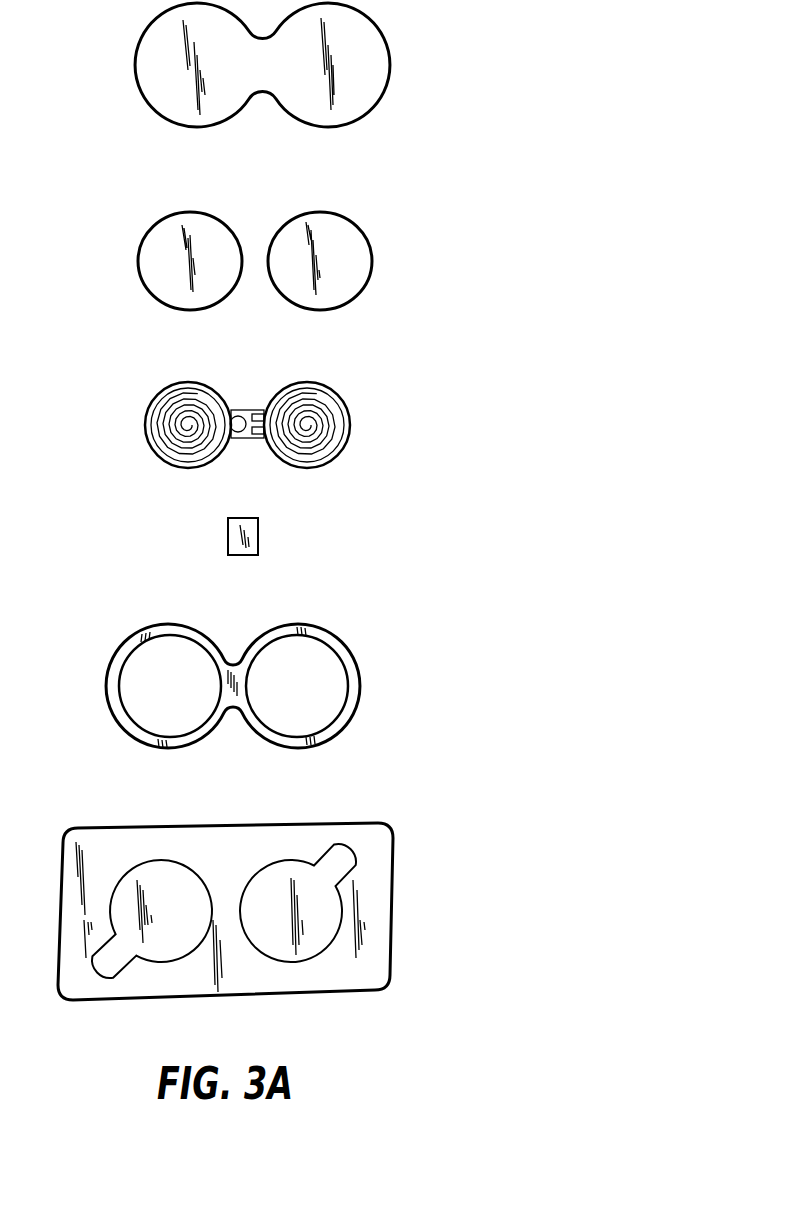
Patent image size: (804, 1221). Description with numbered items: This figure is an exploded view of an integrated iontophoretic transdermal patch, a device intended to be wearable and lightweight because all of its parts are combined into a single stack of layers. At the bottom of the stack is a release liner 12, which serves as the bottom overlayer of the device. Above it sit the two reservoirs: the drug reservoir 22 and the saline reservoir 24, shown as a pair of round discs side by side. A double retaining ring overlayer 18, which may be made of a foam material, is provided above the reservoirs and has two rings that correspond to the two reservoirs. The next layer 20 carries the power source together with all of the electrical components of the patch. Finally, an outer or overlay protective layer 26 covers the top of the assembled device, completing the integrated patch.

The release liner 12 is at (335, 823).
The double retaining ring overlayer 18 is at (335, 633).
The power source layer 20 is at (346, 408).
The drug reservoir 22 is at (210, 213).
The saline reservoir 24 is at (352, 220).
The outer protective layer 26 is at (385, 35).